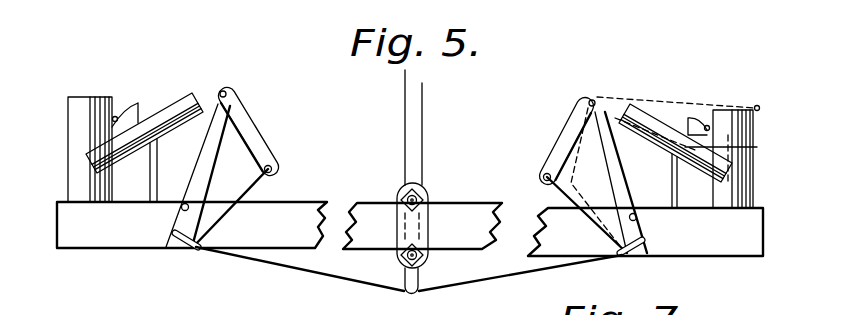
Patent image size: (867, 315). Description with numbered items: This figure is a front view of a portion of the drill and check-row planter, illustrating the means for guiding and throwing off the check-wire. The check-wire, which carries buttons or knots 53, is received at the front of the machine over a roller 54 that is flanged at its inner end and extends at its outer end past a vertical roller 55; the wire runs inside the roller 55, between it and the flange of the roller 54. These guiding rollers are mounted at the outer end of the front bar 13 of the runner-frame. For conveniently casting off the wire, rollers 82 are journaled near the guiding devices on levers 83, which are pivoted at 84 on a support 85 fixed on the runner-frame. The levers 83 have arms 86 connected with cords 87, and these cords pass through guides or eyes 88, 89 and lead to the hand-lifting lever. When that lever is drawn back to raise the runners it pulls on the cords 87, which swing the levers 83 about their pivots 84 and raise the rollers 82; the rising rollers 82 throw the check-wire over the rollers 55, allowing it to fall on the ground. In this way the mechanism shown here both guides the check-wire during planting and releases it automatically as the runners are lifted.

The front bar 13 is at (410, 229).
The buttons or knots 53 is at (708, 126).
The roller 54 is at (135, 108).
The vertical roller 55 is at (72, 108).
The rollers 82 is at (157, 133).
The levers 83 is at (405, 130).
The pivot 84 is at (223, 91).
The support 85 is at (200, 172).
The arms 86 is at (263, 155).
The cords 87 is at (318, 275).
The guides or eyes 88 is at (190, 247).
The guide or eye 89 is at (411, 249).